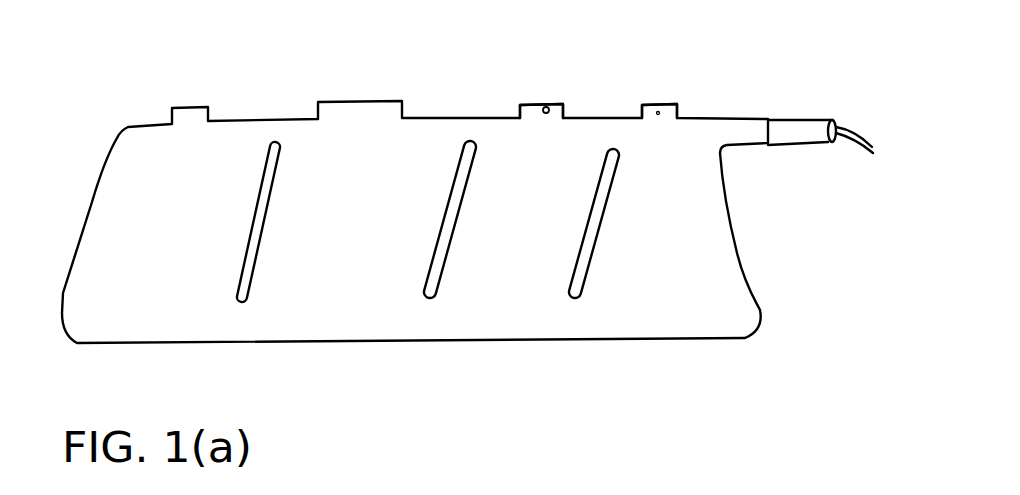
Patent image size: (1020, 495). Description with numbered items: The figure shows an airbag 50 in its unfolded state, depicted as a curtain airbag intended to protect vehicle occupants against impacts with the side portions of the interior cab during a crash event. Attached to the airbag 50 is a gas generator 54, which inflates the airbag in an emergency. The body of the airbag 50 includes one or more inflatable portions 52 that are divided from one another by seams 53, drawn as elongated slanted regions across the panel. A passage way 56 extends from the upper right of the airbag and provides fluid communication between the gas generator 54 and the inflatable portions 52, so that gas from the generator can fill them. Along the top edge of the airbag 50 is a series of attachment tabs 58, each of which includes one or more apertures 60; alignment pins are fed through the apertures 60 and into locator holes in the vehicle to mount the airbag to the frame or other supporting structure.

The airbag 50 is at (747, 322).
The inflatable portions 52 is at (650, 262).
The seams 53 is at (472, 145).
The gas generator 54 is at (803, 130).
The passage way 56 is at (742, 132).
The attachment tabs 58 is at (658, 100).
The apertures 60 is at (549, 108).